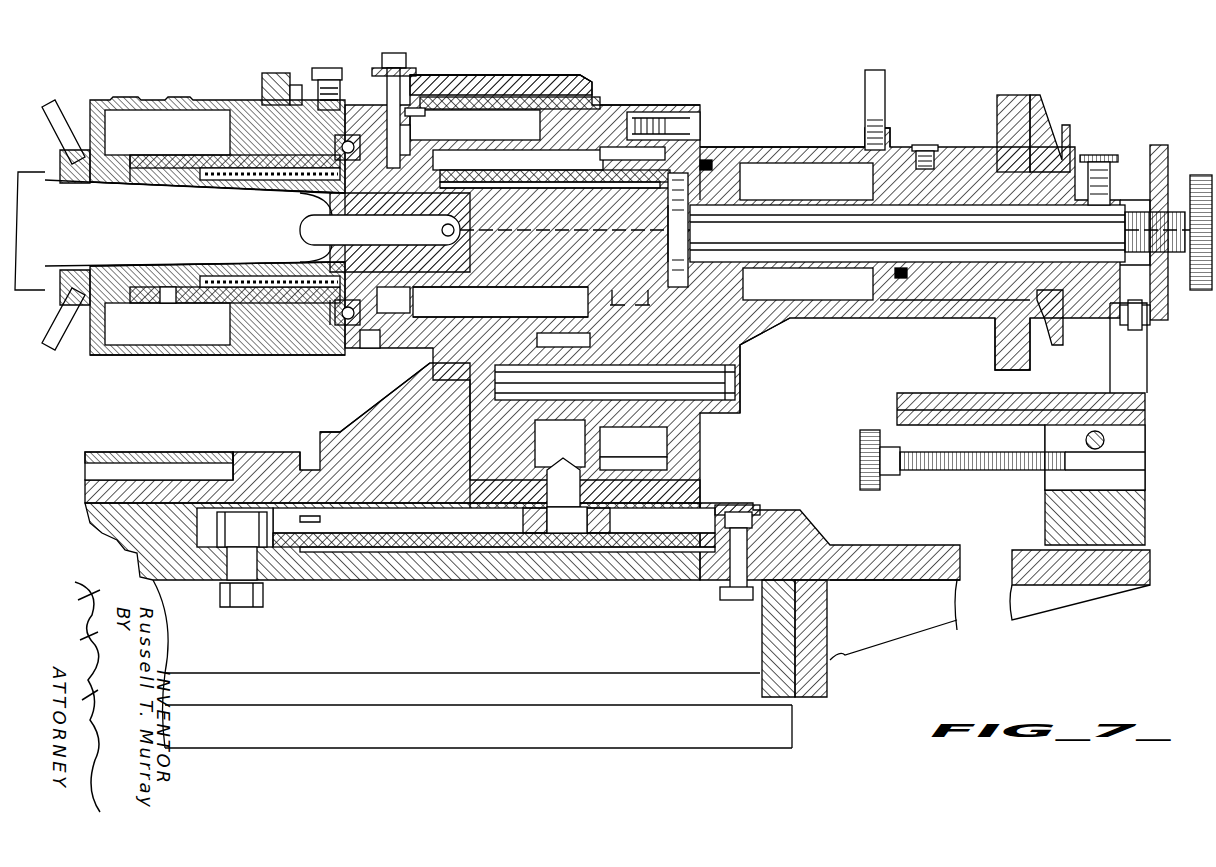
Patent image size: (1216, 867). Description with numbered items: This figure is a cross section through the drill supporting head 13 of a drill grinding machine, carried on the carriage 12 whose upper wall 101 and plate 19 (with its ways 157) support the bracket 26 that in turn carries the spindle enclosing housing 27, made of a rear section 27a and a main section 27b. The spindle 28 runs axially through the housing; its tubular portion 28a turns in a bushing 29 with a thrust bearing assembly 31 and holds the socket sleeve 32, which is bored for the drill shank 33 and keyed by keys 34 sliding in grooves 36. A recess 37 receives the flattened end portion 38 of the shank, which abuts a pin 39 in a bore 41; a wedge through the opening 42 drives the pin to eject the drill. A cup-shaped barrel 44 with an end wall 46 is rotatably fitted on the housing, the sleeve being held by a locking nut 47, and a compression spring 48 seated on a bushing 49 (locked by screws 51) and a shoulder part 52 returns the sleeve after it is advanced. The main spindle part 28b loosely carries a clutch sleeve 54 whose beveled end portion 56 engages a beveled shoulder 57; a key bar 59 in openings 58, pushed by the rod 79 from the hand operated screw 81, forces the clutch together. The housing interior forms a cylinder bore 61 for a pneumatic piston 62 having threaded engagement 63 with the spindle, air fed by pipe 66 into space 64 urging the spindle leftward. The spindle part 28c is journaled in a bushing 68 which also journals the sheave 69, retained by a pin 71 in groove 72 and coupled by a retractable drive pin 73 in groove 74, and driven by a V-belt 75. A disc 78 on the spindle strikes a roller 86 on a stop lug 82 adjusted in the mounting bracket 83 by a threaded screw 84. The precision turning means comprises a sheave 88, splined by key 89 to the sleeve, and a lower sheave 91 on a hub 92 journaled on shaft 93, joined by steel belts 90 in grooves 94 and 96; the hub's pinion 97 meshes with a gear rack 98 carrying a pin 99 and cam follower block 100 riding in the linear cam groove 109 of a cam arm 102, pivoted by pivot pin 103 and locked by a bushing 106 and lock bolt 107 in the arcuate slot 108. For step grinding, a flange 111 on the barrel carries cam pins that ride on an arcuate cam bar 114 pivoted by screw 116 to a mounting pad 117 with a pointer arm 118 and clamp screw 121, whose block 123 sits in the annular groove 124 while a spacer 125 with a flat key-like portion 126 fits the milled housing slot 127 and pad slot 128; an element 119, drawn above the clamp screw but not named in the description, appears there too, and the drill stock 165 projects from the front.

The carriage 12 is at (430, 580).
The drill supporting head 13 is at (588, 72).
The plate 19 is at (255, 452).
The supporting bracket 26 is at (320, 440).
The spindle enclosing housing 27 is at (592, 108).
The rear housing section 27a is at (788, 148).
The main housing section 27b is at (625, 108).
The spindle 28 is at (480, 175).
The tubular spindle portion 28a is at (200, 165).
The main spindle part 28b is at (517, 182).
The rear spindle part 28c is at (797, 268).
The bushing 29 is at (328, 328).
The thrust bearing assembly 31 is at (362, 326).
The socket sleeve 32 is at (160, 186).
The drill shank 33 is at (110, 168).
The keys 34 is at (132, 170).
The grooves 36 is at (135, 186).
The recess 37 is at (315, 232).
The flattened end portion of drill shank 38 is at (310, 198).
The pin 39 is at (420, 222).
The bore 41 is at (448, 236).
The opening 42 is at (487, 182).
The cup-shaped barrel 44 is at (155, 356).
The end wall of barrel 46 is at (88, 345).
The locking nut 47 is at (85, 183).
The compression spring 48 is at (240, 180).
The bushing 49 is at (200, 288).
The screws 51 is at (167, 300).
The shoulder part 52 is at (393, 300).
The sleeve 54 is at (500, 302).
The beveled end portion of sleeve 56 is at (500, 298).
The beveled shoulder 57 is at (500, 302).
The diametrically extending openings 58 is at (668, 204).
The key bar 59 is at (676, 222).
The cylinder bore 61 is at (740, 160).
The pneumatic piston 62 is at (710, 162).
The threaded engagement 63 is at (740, 186).
The space 64 is at (825, 168).
The pipe 66 is at (865, 78).
The bushing 68 is at (900, 270).
The sheave 69 is at (1038, 125).
The pin 71 is at (925, 147).
The groove 72 is at (985, 295).
The retractable drive pin 73 is at (1096, 155).
The groove 74 is at (1118, 205).
The V-belt 75 is at (1005, 95).
The disc 78 is at (1158, 145).
The rod 79 is at (808, 218).
The hand operated screw 81 is at (1202, 175).
The stop lug 82 is at (1125, 378).
The mounting bracket 83 is at (1130, 498).
The threaded screw 84 is at (975, 472).
The roller 86 is at (1150, 315).
The sheave 88 is at (660, 155).
The key 89 is at (565, 180).
The steel belts 90 is at (645, 300).
The sheave 91 is at (690, 330).
The hub 92 is at (640, 440).
The shaft 93 is at (738, 382).
The groove 94 is at (638, 122).
The groove 96 is at (650, 462).
The pinion 97 is at (556, 335).
The gear rack 98 is at (575, 414).
The pin 99 is at (567, 540).
The cam follower block 100 is at (605, 540).
The upper wall of carriage 101 is at (302, 550).
The cam arm 102 is at (380, 547).
The pivot pin 103 is at (250, 604).
The bushing 106 is at (730, 512).
The lock bolt 107 is at (735, 600).
The arcuate slot 108 is at (715, 570).
The linear cam groove 109 is at (488, 530).
The flange 111 is at (262, 78).
The arcuate cam bar 114 is at (300, 88).
The screw 116 is at (327, 68).
The adjustable mounting pad 117 is at (560, 90).
The pointer arm 118 is at (500, 76).
The plate 119 is at (410, 70).
The clamp screw 121 is at (382, 58).
The block 123 is at (475, 125).
The annular groove 124 is at (395, 335).
The spacer 125 is at (410, 128).
The flat key-like portion 126 is at (405, 128).
The milled housing slot 127 is at (527, 100).
The slot 128 is at (425, 112).
The ways 157 is at (98, 462).
The drill stock 165 is at (40, 288).